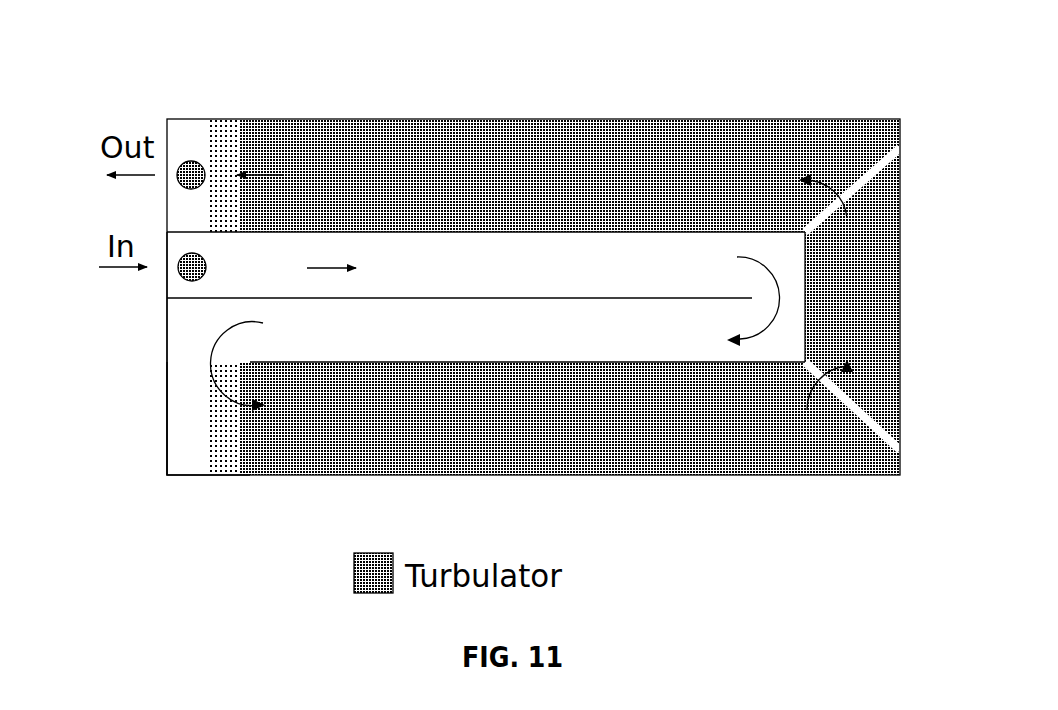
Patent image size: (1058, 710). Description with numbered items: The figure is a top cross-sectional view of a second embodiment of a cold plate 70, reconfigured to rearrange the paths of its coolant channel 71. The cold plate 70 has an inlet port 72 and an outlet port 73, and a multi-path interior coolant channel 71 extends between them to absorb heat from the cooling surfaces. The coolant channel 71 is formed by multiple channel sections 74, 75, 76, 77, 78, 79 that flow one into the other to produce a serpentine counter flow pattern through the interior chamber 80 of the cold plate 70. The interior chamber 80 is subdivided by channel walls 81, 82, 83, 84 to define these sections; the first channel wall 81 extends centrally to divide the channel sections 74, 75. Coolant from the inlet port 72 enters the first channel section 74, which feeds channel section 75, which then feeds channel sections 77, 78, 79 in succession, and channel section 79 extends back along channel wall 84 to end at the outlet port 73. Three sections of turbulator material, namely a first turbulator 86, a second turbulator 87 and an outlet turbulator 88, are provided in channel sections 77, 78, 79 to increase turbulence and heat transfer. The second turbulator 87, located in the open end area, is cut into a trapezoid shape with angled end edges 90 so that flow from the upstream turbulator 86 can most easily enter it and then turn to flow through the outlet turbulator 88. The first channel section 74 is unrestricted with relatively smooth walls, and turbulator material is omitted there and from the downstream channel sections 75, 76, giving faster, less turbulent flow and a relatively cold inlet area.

The cold plate 70 is at (786, 103).
The coolant channel 71 is at (180, 342).
The inlet port 72 is at (192, 282).
The outlet port 73 is at (192, 161).
The first channel section 74 is at (432, 252).
The channel section 75 is at (375, 343).
The channel section 76 is at (180, 416).
The channel section 77 is at (556, 455).
The channel section 78 is at (882, 325).
The channel section 79 is at (598, 146).
The interior chamber 80 is at (174, 389).
The first channel wall 81 is at (276, 298).
The channel wall 82 is at (517, 372).
The channel wall 83 is at (807, 277).
The channel wall 84 is at (512, 235).
The first turbulator 86 is at (697, 443).
The second turbulator 87 is at (890, 380).
The outlet turbulator 88 is at (697, 146).
The angled end edges 90 is at (857, 177).